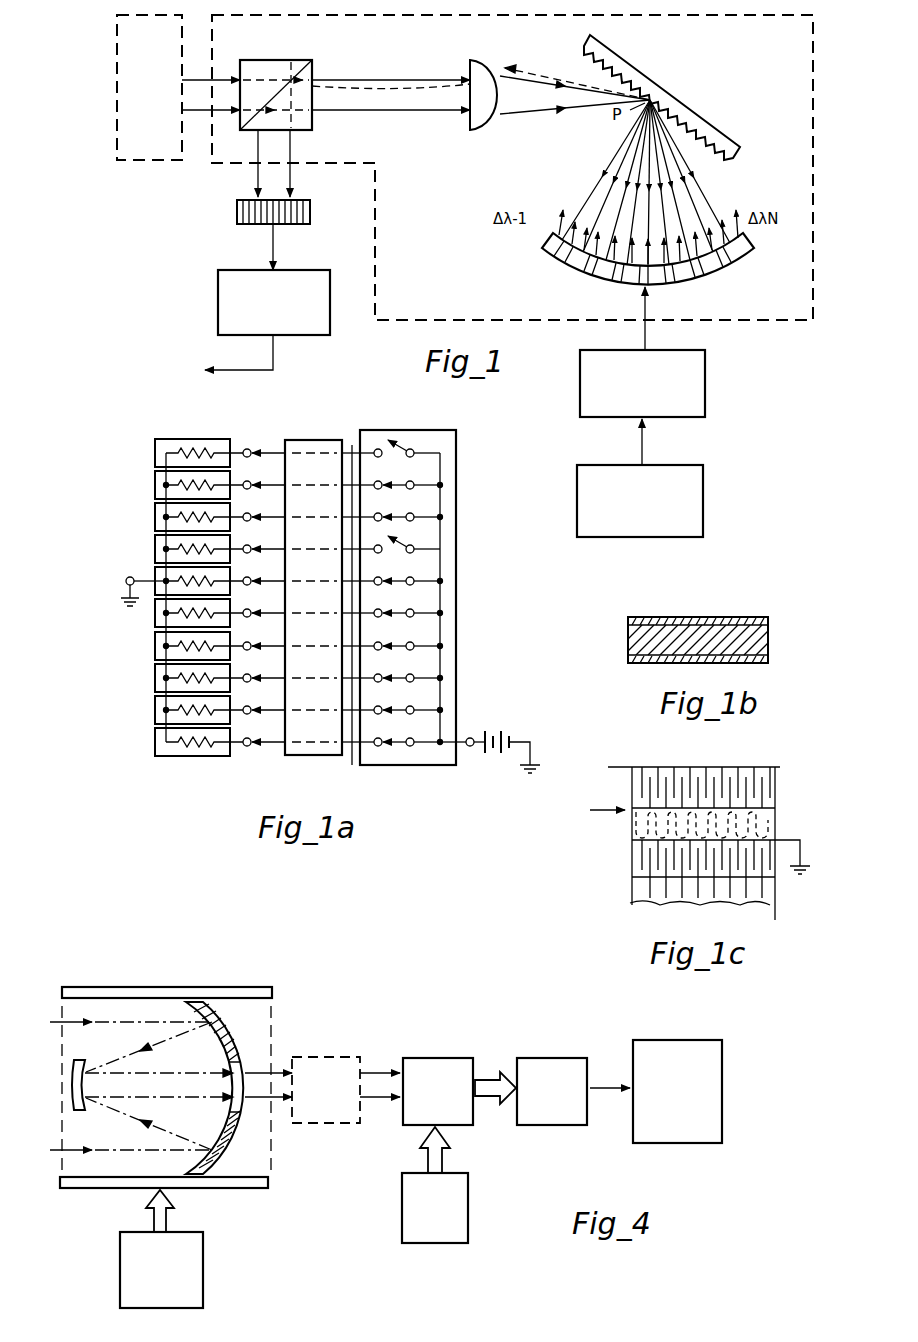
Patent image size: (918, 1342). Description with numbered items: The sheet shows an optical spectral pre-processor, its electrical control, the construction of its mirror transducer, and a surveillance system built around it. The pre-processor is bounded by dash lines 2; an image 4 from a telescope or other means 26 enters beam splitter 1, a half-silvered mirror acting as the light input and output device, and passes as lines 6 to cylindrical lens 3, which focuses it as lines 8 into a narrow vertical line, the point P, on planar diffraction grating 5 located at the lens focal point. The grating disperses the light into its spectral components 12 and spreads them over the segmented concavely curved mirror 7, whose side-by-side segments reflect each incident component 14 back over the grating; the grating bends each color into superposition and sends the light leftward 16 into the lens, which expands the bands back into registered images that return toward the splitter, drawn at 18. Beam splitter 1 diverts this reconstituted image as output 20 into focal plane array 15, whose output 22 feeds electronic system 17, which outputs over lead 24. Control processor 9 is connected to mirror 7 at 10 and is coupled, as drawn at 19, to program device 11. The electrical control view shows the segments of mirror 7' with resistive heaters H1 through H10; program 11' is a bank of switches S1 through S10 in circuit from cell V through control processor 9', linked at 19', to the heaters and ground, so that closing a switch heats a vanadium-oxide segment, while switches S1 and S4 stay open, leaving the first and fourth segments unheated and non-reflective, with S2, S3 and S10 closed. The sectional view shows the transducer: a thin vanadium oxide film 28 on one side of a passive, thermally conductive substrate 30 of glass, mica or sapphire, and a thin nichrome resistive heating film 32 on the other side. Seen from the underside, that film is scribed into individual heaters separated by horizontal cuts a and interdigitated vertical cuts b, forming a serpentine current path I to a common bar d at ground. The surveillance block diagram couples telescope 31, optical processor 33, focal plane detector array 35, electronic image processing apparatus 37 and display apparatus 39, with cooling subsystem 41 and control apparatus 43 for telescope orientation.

In FIG. 1, the beam splitter 1 is at (285, 60).
In FIG. 1, the dash lines 2 is at (813, 68).
In FIG. 1, the cylindrical lens 3 is at (490, 60).
In FIG. 1, the lines 4 is at (210, 82).
In FIG. 1, the planar diffraction grating 5 is at (660, 78).
In FIG. 1, the lines 6 is at (392, 70).
In FIG. 1, the segmented concavely curved mirror 7 is at (648, 268).
In FIG. 1, the lines 8 is at (540, 108).
In FIG. 1, the control processor 9 is at (654, 383).
In FIG. 1, the connection 10 is at (645, 336).
In FIG. 1, the program device 11 is at (656, 501).
In FIG. 1, the lines 12 is at (610, 168).
In FIG. 1, the incident light component 14 is at (558, 222).
In FIG. 1, the focal plane array 15 is at (310, 210).
In FIG. 1, the light 16 is at (570, 57).
In FIG. 1, the electronic system 17 is at (330, 300).
In FIG. 1, the reflected beam 18 is at (428, 84).
In FIG. 1, the program connection 19 is at (660, 442).
In FIG. 1, the output 20 is at (292, 172).
In FIG. 1, the output 22 is at (273, 246).
In FIG. 1, the lead 24 is at (273, 350).
In FIG. 1, the dash lines 26 is at (178, 160).
In FIG. 1A, the mirror 7' is at (203, 584).
In FIG. 1A, the processor 9' is at (313, 583).
In FIG. 1A, the program 11' is at (399, 581).
In FIG. 1A, the connection line 19' is at (353, 586).
In FIG. 1A, the resistive heater element H1 is at (198, 439).
In FIG. 1A, the resistive heater element H10 is at (190, 756).
In FIG. 1A, the switch S1 is at (404, 440).
In FIG. 1A, the switch S2 is at (402, 478).
In FIG. 1A, the switch S3 is at (402, 510).
In FIG. 1A, the switch S4 is at (402, 540).
In FIG. 1A, the switch S10 is at (395, 748).
In FIG. 1A, the cell V is at (482, 752).
In FIG. 1B, the layer of vanadium oxide 28 is at (700, 617).
In FIG. 1B, the substrate 30 is at (768, 622).
In FIG. 1B, the thin film resistive heating element 32 is at (645, 663).
In FIG. 1C, the cut a is at (682, 775).
In FIG. 1C, the vertical cut b is at (652, 775).
In FIG. 1C, the common bar d is at (768, 795).
In FIG. 1C, the serpentine current conducting path I is at (607, 799).
In FIG. 4, the telescope 31 is at (172, 992).
In FIG. 4, the optical processor 33 is at (318, 1057).
In FIG. 4, the focal plane detector array 35 is at (430, 1058).
In FIG. 4, the electronic image processing apparatus 37 is at (545, 1058).
In FIG. 4, the display apparatus 39 is at (668, 1040).
In FIG. 4, the cooling subsystem 41 is at (468, 1196).
In FIG. 4, the control apparatus 43 is at (192, 1232).